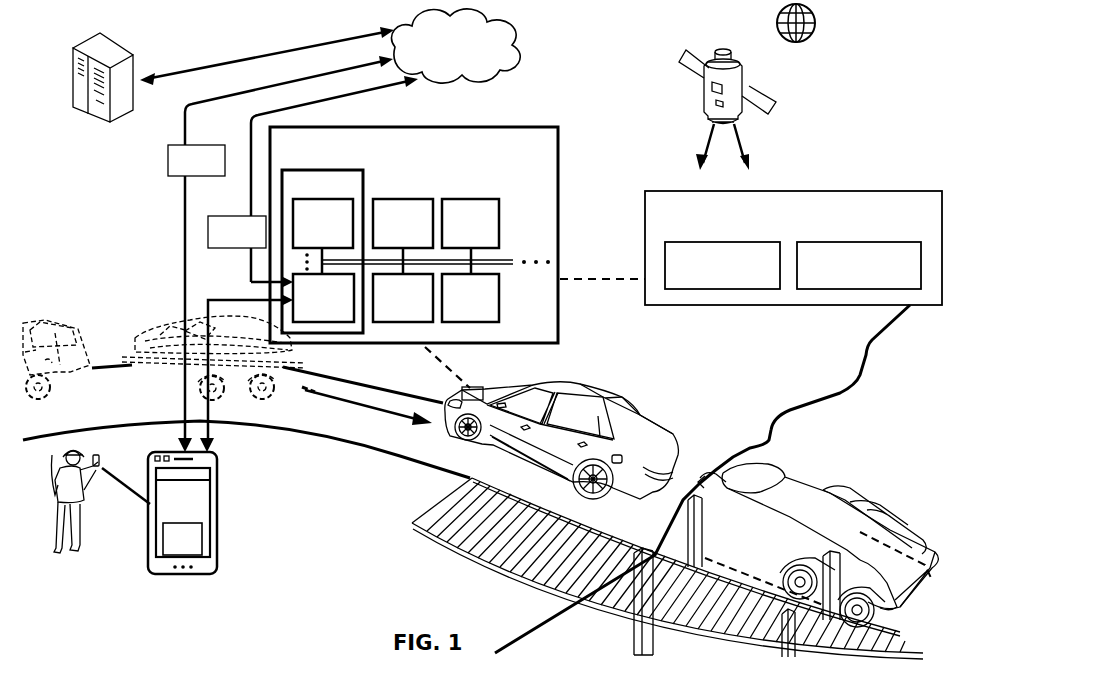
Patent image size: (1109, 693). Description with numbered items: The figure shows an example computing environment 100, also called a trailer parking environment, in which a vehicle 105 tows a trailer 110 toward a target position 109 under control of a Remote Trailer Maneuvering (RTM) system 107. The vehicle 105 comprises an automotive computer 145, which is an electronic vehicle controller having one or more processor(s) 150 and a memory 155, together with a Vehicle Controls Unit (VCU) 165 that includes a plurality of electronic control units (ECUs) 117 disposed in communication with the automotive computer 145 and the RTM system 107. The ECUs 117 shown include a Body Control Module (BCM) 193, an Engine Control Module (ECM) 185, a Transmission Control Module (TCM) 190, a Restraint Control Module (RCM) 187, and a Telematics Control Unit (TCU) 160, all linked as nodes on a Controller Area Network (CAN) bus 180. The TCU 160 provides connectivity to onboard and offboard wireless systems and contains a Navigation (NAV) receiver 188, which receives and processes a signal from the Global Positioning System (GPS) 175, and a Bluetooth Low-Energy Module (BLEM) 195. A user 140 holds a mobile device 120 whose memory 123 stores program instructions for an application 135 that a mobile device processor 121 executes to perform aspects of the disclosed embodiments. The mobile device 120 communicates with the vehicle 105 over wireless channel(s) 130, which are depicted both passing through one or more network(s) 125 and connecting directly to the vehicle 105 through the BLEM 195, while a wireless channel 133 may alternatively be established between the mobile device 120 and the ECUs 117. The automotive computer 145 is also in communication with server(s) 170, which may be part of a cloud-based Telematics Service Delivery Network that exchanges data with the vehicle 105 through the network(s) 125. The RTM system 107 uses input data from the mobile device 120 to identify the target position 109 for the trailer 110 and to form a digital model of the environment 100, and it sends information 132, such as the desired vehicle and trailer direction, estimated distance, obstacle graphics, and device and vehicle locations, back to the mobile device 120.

The computing environment 100 is at (916, 60).
The vehicle 105 is at (641, 418).
The Remote Trailer Maneuvering (RTM) system 107 is at (640, 362).
The target position 109 is at (680, 540).
The trailer 110 is at (678, 475).
The electronic control units (ECUs) 117 is at (537, 243).
The mobile device 120 is at (189, 489).
The mobile device processor 121 is at (160, 454).
The memory 123 is at (155, 434).
The network(s) 125 is at (455, 46).
The wireless channel(s) 130 is at (185, 291).
The information 132 is at (293, 248).
The wireless channel(s) 133 is at (247, 299).
The application 135 is at (203, 538).
The user 140 is at (62, 432).
The automotive computer 145 is at (793, 248).
The processor(s) 150 is at (722, 265).
The memory 155 is at (859, 265).
The Telematics Control Unit (TCU) 160 is at (322, 251).
The Vehicle Controls Unit (VCU) 165 is at (414, 235).
The server(s) 170 is at (105, 122).
The Global Positioning System (GPS) 175 is at (740, 68).
The Controller Area Network (CAN) bus 180 is at (511, 264).
The Engine Control Module (ECM) 185 is at (470, 223).
The Restraint Control Module (RCM) 187 is at (470, 298).
The Navigation (NAV) receiver 188 is at (323, 223).
The Transmission Control Module (TCM) 190 is at (403, 298).
The Body Control Module (BCM) 193 is at (403, 223).
The Bluetooth Low-Energy Module (BLEM) 195 is at (323, 298).